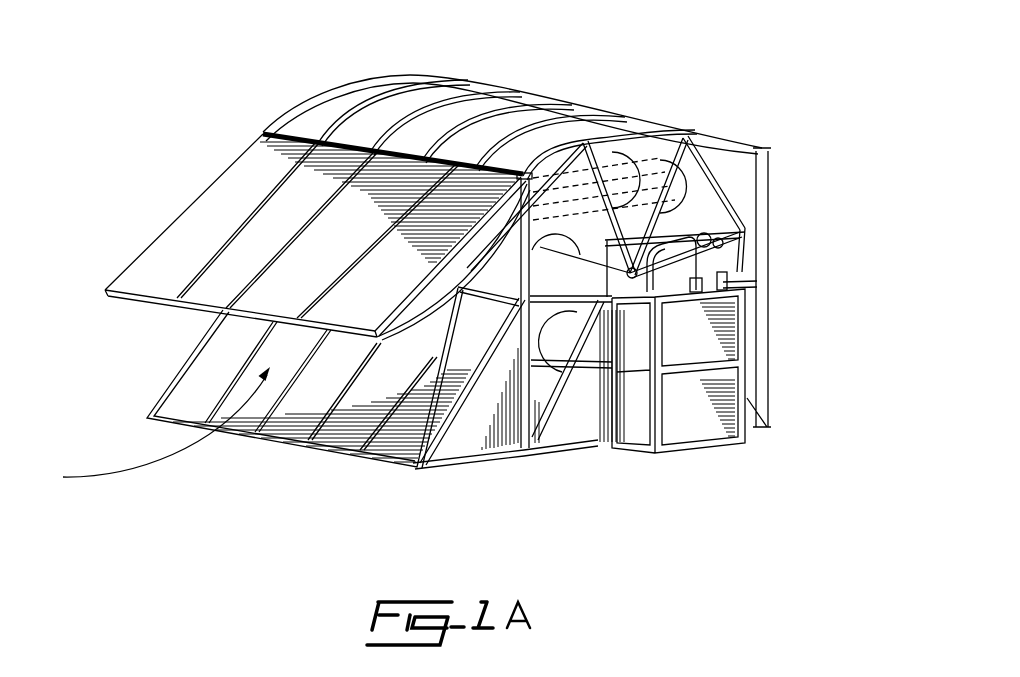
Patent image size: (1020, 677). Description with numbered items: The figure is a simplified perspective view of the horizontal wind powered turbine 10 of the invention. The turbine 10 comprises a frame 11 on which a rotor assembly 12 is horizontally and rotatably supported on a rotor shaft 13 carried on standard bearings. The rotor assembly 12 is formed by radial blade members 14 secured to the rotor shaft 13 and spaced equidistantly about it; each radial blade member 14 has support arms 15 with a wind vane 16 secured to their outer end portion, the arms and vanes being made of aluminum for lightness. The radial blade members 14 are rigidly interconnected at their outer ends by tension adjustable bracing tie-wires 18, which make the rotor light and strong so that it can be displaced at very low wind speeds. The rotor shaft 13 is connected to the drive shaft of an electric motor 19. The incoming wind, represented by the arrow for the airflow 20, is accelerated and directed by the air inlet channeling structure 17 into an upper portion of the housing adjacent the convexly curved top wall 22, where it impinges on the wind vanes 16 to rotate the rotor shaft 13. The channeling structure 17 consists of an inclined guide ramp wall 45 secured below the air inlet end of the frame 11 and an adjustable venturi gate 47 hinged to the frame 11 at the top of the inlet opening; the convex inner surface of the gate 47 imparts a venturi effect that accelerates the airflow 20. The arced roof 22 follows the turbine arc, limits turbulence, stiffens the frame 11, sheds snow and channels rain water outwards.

The wind powered turbine 10 is at (522, 62).
The frame 11 is at (763, 289).
The rotor assembly 12 is at (580, 365).
The rotor shaft 13 is at (603, 272).
The radial blade member 14 is at (620, 176).
The support arms 15 is at (662, 190).
The wind vane 16 is at (663, 160).
The air inlet channeling structure 17 is at (170, 228).
The tension adjustable bracing tie-wires 18 is at (717, 193).
The electric motor 19 is at (697, 260).
The airflow 20 is at (185, 462).
The convexly curved top wall 22 is at (363, 120).
The inclined guide ramp wall 45 is at (400, 435).
The adjustable venturi gate 47 is at (150, 277).